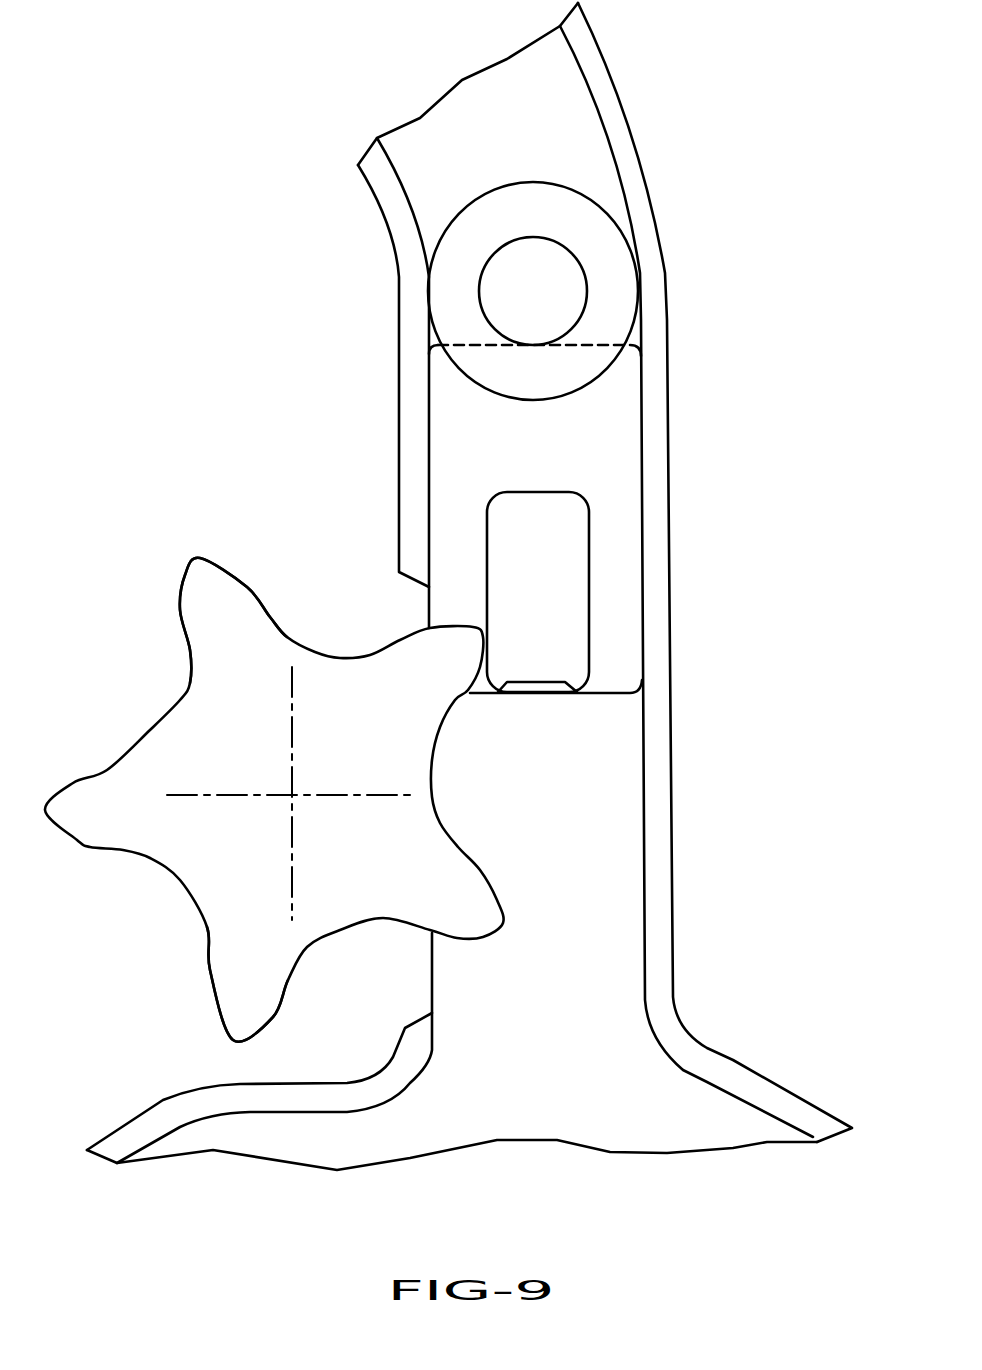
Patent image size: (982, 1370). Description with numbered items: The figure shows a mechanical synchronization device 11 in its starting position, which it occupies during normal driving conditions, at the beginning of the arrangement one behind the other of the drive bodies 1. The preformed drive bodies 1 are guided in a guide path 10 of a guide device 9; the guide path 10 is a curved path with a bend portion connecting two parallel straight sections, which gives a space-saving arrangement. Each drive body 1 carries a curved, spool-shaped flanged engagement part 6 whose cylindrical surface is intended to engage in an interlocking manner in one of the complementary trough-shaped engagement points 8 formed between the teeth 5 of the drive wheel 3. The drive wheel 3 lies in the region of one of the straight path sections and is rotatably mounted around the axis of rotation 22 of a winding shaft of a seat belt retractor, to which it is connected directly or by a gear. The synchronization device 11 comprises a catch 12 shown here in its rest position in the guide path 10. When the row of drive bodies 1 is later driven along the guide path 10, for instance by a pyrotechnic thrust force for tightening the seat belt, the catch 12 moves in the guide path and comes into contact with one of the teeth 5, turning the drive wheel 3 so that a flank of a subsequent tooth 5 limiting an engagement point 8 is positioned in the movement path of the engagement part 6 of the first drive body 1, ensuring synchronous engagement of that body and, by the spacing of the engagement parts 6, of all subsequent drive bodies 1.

The guide path 10 is at (506, 139).
The drive body 1 is at (505, 282).
The engagement part 6 is at (475, 383).
The guide device 9 is at (647, 250).
The mechanical synchronization device 11 is at (617, 613).
The catch 12 is at (553, 550).
The drive wheel 3 is at (227, 873).
The engagement point 8 is at (287, 637).
The tooth 5 is at (240, 1020).
The axis of rotation 22 is at (292, 793).